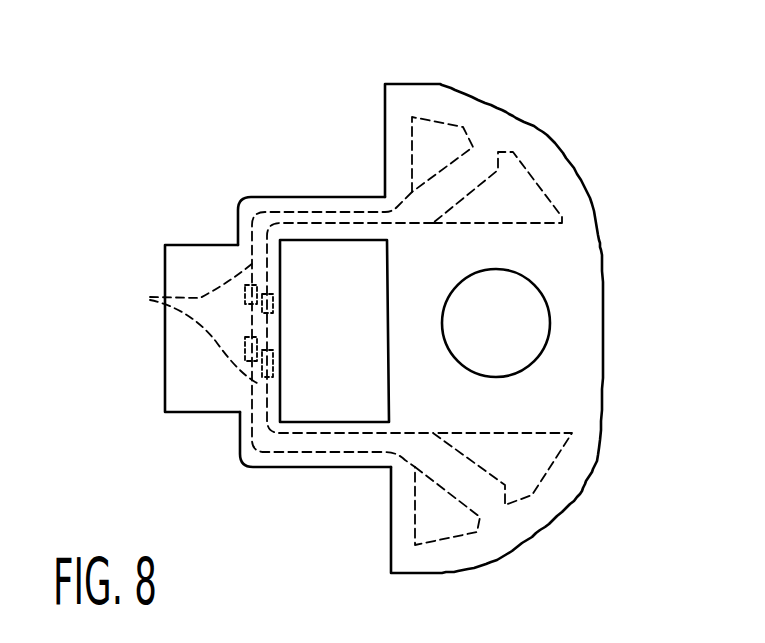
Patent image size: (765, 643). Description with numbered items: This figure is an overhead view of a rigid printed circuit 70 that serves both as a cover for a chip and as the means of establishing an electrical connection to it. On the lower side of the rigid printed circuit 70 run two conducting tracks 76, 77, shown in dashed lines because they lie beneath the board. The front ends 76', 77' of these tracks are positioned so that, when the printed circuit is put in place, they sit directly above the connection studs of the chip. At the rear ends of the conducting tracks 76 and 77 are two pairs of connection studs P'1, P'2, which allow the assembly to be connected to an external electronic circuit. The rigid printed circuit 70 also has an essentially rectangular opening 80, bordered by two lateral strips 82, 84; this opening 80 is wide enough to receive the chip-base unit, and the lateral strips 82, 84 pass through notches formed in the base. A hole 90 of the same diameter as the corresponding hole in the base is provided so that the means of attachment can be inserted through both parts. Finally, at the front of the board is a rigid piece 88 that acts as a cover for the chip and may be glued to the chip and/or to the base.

The rigid printed circuit 70 is at (442, 83).
The lateral strip 84 is at (272, 197).
The lateral strip 82 is at (283, 467).
The rigid piece 88 is at (176, 266).
The opening 80 is at (357, 333).
The conducting track 77 is at (333, 295).
The conducting track 76 is at (350, 379).
The front end of conducting track 77' is at (169, 323).
The front end of conducting track 76' is at (306, 343).
The hole 90 is at (530, 329).
The pair of connection studs P'1 is at (501, 515).
The pair of connection studs P'2 is at (520, 151).